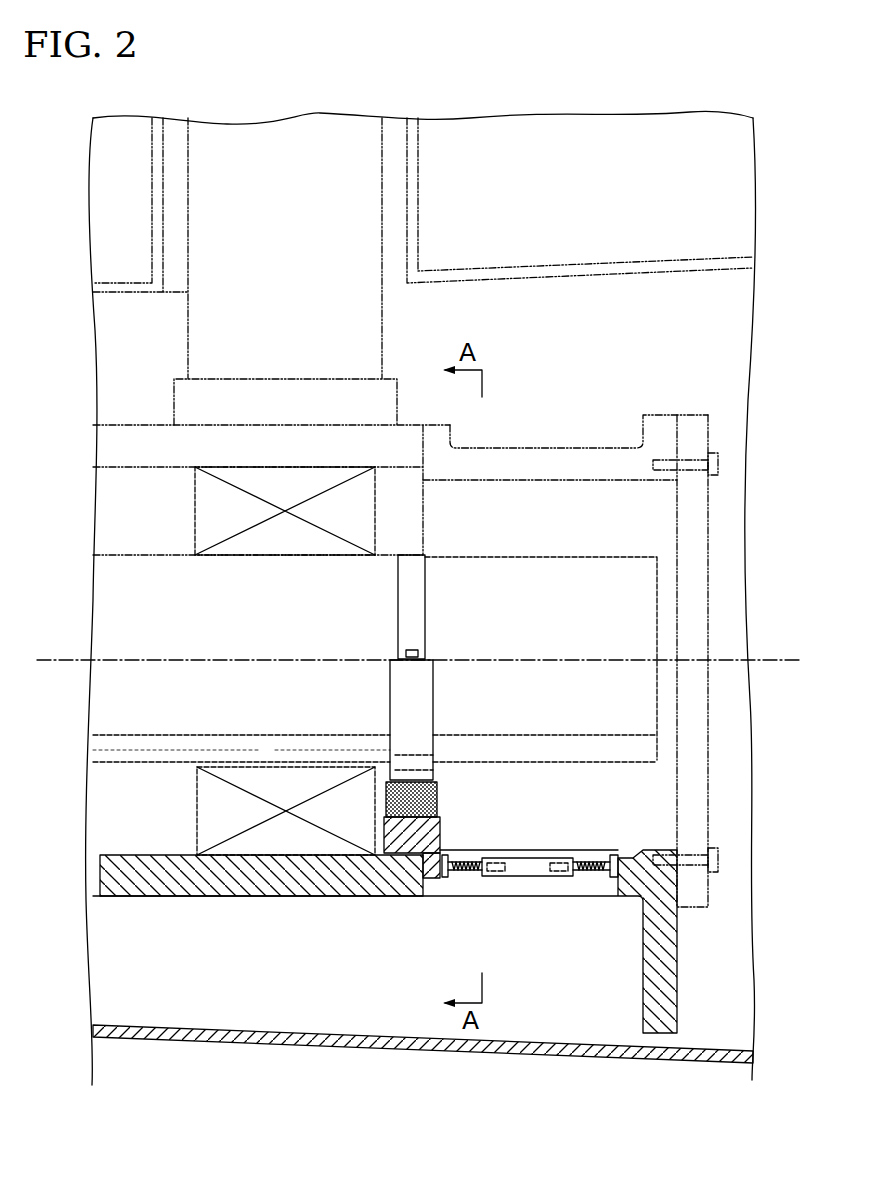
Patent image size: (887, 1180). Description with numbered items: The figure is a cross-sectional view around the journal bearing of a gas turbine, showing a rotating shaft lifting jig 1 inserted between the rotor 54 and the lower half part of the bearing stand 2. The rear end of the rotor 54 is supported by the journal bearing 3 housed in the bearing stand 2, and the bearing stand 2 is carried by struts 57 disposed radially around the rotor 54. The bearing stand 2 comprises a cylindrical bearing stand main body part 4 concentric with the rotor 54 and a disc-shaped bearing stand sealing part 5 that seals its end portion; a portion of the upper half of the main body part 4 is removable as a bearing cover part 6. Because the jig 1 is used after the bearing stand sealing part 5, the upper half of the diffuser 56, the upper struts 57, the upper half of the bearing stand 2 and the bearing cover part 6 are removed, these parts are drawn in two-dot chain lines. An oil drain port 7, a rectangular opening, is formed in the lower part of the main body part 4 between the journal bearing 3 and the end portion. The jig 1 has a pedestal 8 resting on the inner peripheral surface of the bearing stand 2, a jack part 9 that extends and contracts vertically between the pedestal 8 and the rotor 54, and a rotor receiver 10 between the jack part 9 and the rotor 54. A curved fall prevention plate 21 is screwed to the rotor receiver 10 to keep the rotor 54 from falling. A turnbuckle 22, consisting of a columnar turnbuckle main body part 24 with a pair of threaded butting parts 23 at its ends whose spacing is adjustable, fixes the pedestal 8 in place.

The rotating shaft lifting jig 1 is at (498, 948).
The bearing stand 2 is at (420, 413).
The journal bearing 3 is at (223, 815).
The bearing stand main body part 4 is at (277, 877).
The bearing stand sealing part 5 is at (705, 515).
The bearing cover part 6 is at (552, 457).
The oil drain port 7 is at (430, 863).
The pedestal 8 is at (408, 835).
The jack part 9 is at (423, 802).
The rotor receiver 10 is at (402, 712).
The fall prevention plate 21 is at (418, 583).
The turnbuckle 22 is at (517, 884).
The butting parts 23 is at (448, 877).
The turnbuckle main body part 24 is at (537, 870).
The rotor 54 is at (147, 700).
The diffuser 56 is at (553, 268).
The struts 57 is at (367, 312).